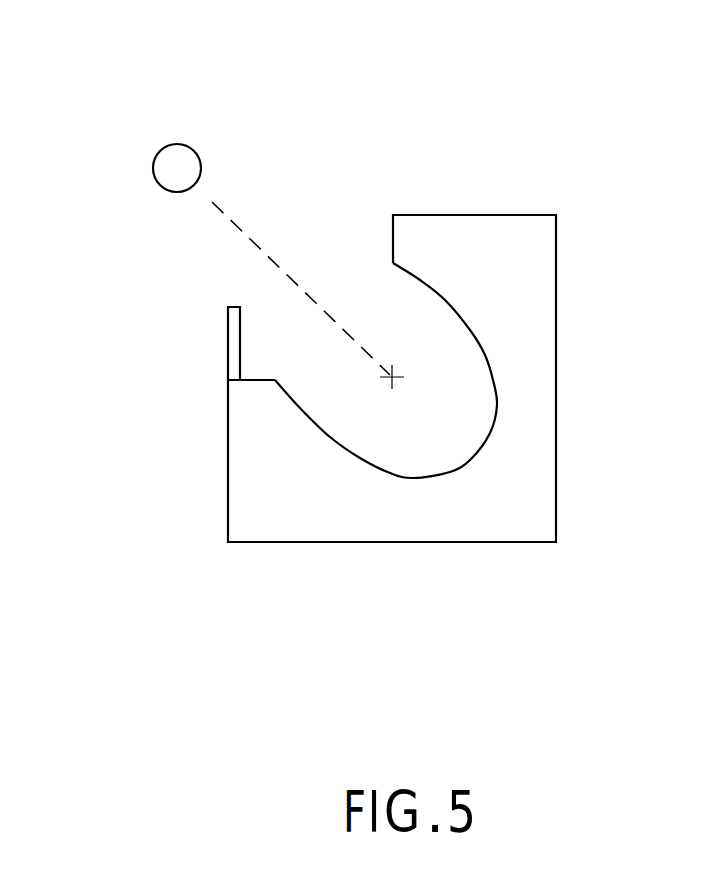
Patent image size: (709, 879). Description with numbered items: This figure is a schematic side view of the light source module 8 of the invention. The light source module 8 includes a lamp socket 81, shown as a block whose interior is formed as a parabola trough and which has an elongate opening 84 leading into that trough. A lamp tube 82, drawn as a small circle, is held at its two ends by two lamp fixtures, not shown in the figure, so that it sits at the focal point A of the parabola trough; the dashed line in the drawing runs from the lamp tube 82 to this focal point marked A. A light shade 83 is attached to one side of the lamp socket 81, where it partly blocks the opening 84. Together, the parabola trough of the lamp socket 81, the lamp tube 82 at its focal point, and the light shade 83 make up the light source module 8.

The light source module 8 is at (375, 396).
The lamp socket 81 is at (535, 320).
The lamp tube 82 is at (180, 155).
The light shade 83 is at (230, 358).
The elongate opening 84 is at (392, 328).